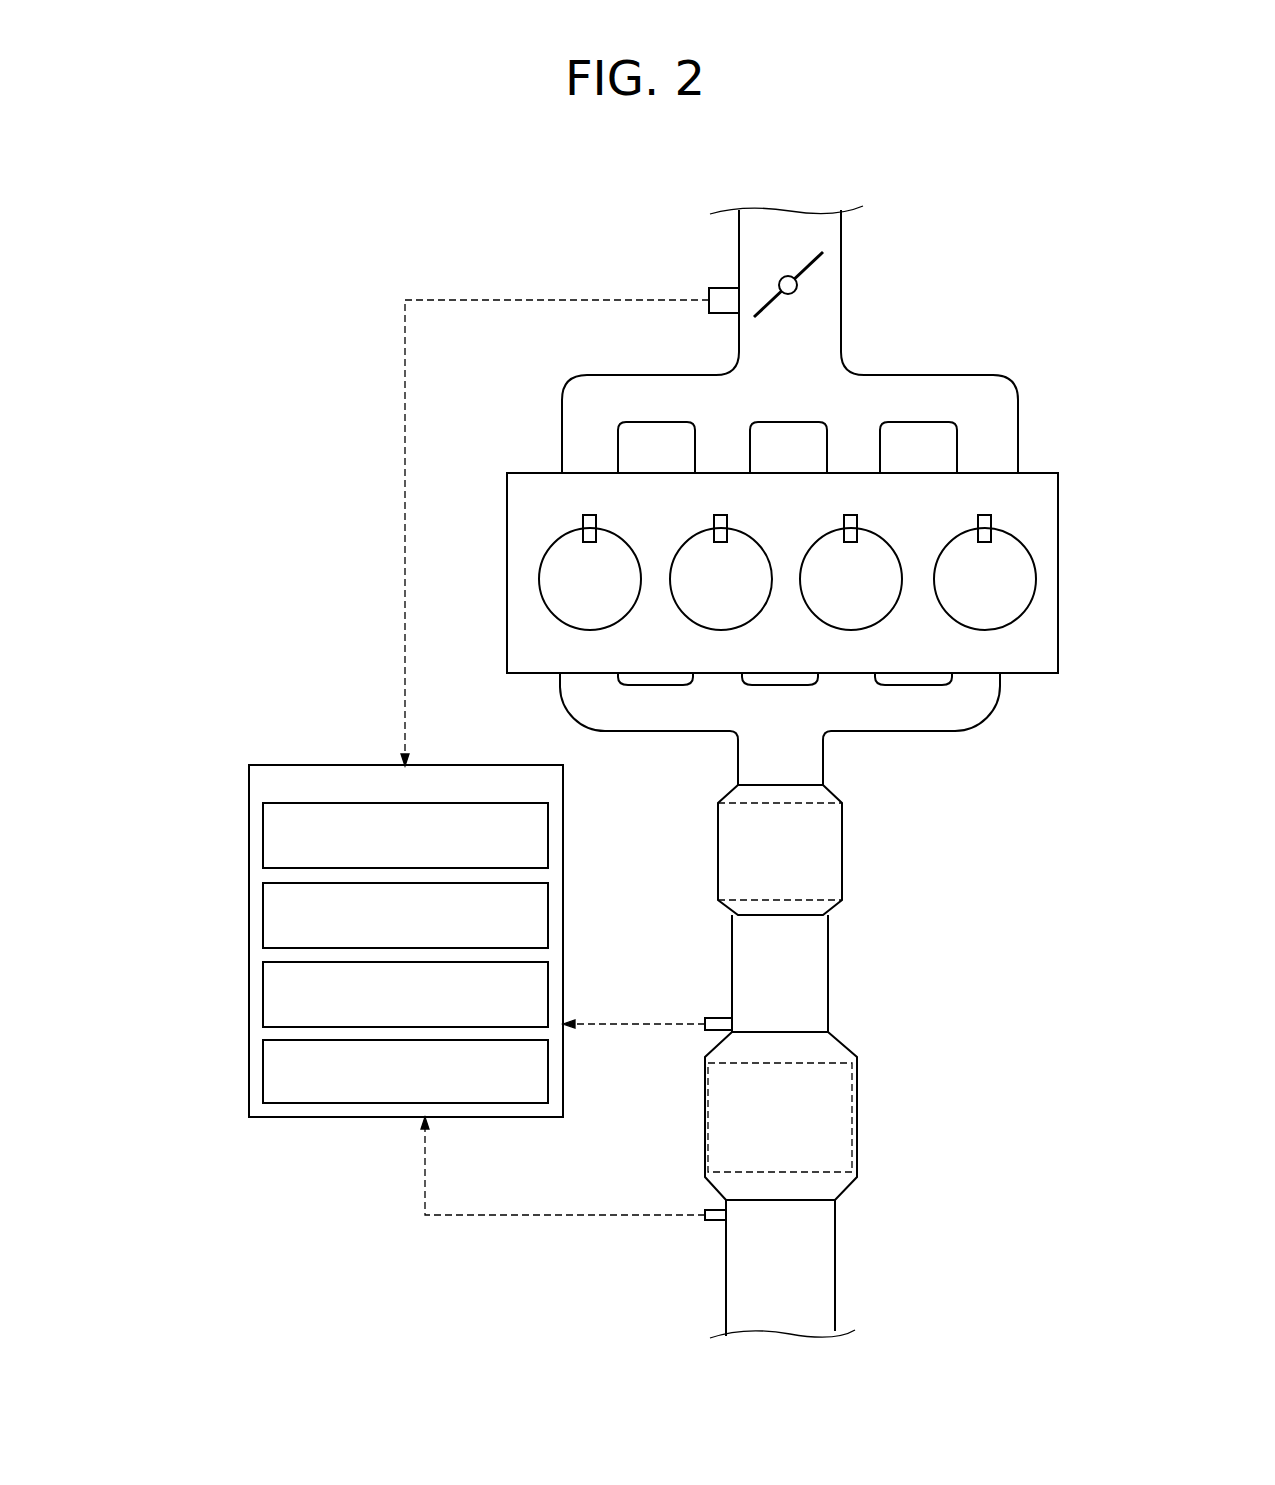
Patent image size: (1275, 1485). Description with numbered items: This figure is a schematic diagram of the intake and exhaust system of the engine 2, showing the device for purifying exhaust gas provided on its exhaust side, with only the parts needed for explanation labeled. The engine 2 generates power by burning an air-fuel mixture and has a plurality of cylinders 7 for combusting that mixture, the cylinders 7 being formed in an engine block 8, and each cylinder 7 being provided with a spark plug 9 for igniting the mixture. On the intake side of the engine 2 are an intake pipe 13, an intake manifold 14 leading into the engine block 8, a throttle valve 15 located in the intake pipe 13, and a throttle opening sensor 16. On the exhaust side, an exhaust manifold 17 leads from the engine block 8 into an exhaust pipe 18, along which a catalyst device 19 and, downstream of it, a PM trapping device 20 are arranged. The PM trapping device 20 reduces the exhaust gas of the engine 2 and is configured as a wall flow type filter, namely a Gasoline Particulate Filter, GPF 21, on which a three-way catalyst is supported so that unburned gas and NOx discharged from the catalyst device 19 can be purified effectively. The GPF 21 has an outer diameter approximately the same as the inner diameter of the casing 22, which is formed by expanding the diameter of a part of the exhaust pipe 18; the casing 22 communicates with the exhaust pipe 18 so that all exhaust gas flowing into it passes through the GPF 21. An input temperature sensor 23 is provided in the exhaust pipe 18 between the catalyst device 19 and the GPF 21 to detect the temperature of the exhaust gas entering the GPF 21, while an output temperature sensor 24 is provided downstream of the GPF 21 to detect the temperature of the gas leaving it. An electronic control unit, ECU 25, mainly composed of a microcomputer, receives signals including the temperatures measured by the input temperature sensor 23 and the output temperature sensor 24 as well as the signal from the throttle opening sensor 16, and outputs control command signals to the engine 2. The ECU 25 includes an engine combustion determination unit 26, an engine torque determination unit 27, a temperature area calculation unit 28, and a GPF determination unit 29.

The engine 2 is at (1010, 308).
The cylinder 7 is at (677, 608).
The engine block 8 is at (1043, 487).
The spark plug 9 is at (713, 522).
The intake pipe 13 is at (832, 294).
The intake manifold 14 is at (938, 375).
The throttle valve 15 is at (826, 263).
The throttle opening sensor 16 is at (726, 289).
The exhaust manifold 17 is at (897, 732).
The exhaust pipe 18 is at (738, 765).
The catalyst device 19 is at (718, 850).
The PM trapping device 20 is at (870, 1040).
The GPF 21 is at (832, 1104).
The casing 22 is at (705, 1118).
The input temperature sensor 23 is at (718, 1016).
The output temperature sensor 24 is at (708, 1222).
The electronic control unit 25 is at (367, 1118).
The engine combustion determination unit 26 is at (263, 836).
The engine torque determination unit 27 is at (263, 915).
The temperature area calculation unit 28 is at (263, 989).
The GPF determination unit 29 is at (263, 1072).